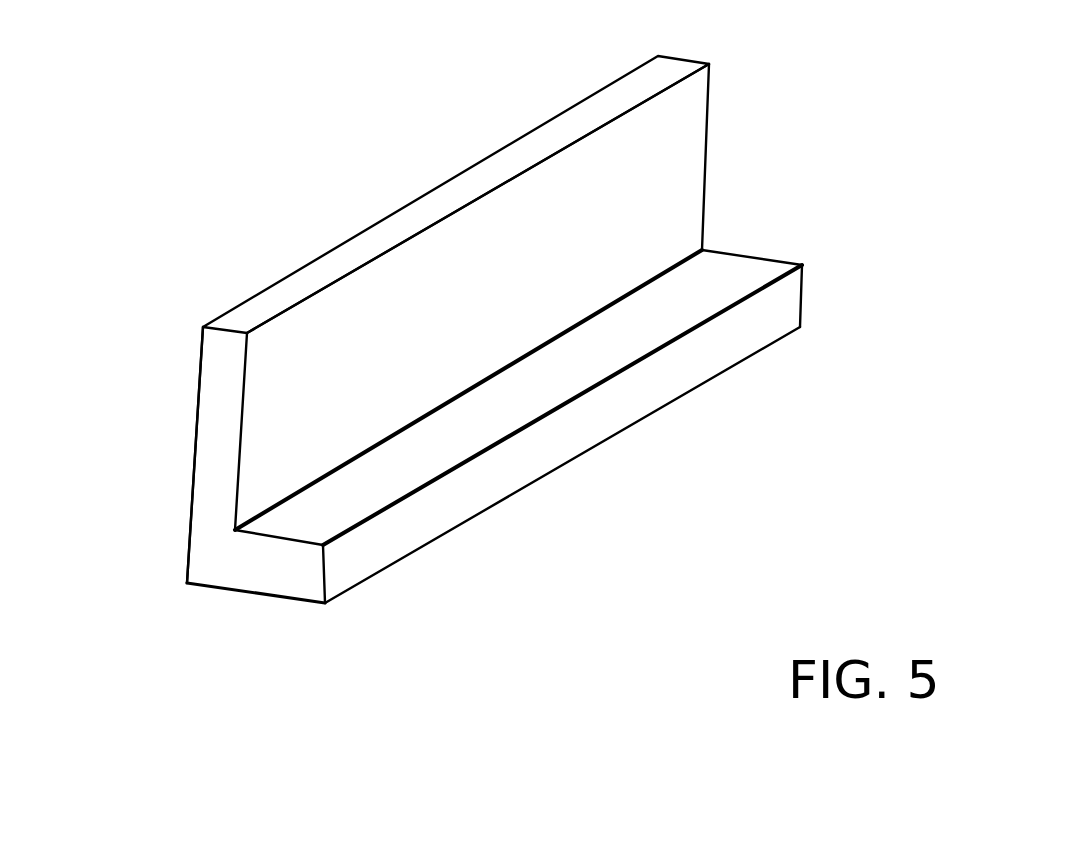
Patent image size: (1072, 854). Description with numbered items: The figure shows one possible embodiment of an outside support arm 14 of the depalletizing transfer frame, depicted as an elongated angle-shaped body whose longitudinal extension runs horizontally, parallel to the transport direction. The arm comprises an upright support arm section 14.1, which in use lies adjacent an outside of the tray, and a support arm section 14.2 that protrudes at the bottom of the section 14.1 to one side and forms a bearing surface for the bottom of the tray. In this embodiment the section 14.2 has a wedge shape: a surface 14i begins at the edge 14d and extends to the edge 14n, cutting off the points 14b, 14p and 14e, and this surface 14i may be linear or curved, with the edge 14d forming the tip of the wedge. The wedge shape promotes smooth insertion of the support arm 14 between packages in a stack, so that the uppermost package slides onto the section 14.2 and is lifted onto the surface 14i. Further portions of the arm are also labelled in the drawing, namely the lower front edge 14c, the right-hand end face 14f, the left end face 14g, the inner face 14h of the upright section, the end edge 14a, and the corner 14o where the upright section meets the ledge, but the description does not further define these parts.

The outside support arm 14 is at (385, 170).
The support arm section 14.1 is at (210, 393).
The support arm section 14.2 is at (277, 575).
The front end edge of horizontal leg 14a is at (328, 603).
The point 14b is at (317, 538).
The lower front edge of horizontal leg 14c is at (463, 523).
The edge 14d is at (687, 393).
The point 14e is at (647, 352).
The rear end face of horizontal leg 14f is at (800, 300).
The end face of profile 14g is at (290, 603).
The inner face of vertical leg 14h is at (650, 197).
The surface 14i is at (732, 280).
The edge 14n is at (337, 470).
The rear corner of vertical leg 14o is at (703, 247).
The point 14p is at (502, 437).